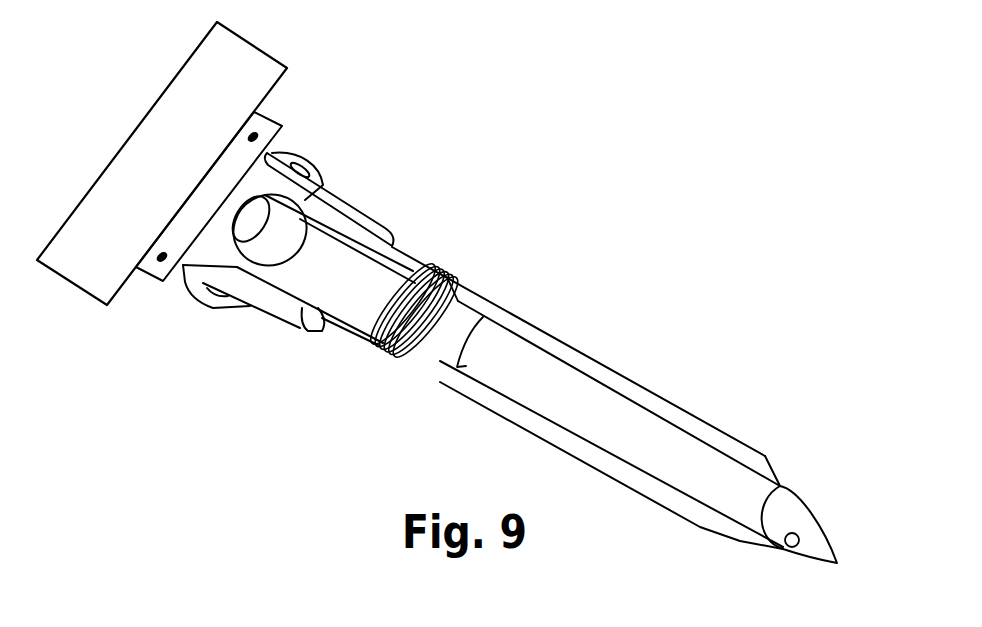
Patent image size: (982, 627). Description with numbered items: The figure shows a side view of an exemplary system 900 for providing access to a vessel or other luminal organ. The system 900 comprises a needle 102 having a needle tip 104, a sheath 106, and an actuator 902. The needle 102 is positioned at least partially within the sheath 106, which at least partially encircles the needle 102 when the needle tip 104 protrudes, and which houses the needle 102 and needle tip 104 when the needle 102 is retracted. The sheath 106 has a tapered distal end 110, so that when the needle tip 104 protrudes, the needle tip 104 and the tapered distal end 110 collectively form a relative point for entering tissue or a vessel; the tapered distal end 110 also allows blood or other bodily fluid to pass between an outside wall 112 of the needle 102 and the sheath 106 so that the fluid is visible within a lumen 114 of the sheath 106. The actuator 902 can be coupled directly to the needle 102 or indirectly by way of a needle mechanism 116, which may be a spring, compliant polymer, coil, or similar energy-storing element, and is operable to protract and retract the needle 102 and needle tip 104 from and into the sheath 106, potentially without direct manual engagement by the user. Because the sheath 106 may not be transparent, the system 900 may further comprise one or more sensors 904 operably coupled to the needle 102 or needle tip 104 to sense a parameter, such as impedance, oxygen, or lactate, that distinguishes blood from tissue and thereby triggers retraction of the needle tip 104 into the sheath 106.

The system 900 is at (428, 200).
The actuator 902 is at (243, 58).
The sensor 904 is at (788, 547).
The needle 102 is at (600, 382).
The needle tip 104 is at (813, 520).
The sheath 106 is at (682, 410).
The tapered distal end 110 is at (764, 460).
The outside wall 112 is at (545, 370).
The lumen 114 is at (530, 412).
The needle mechanism 116 is at (435, 275).